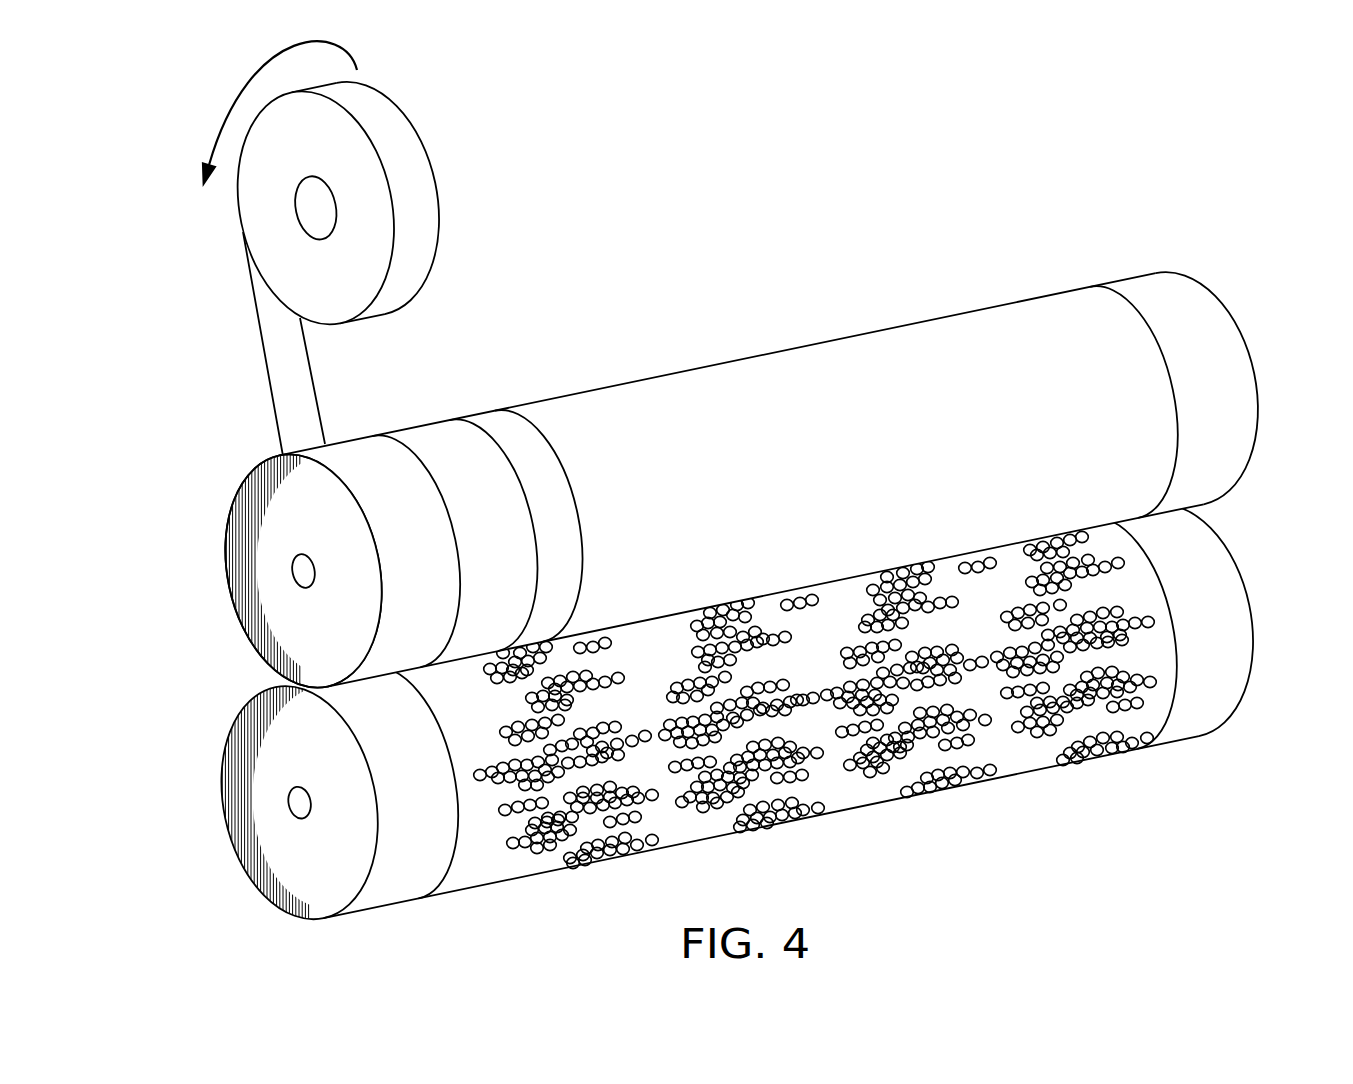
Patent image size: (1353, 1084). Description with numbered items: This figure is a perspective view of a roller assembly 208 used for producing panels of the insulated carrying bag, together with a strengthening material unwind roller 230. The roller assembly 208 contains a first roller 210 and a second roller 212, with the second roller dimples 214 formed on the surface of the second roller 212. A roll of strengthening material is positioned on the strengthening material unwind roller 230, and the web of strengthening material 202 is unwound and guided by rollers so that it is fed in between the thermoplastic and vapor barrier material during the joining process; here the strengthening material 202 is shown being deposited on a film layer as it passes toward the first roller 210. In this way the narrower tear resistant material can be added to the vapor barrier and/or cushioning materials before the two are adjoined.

The strengthening material 202 is at (292, 383).
The roller assembly 208 is at (702, 487).
The first roller 210 is at (903, 340).
The second roller 212 is at (1213, 682).
The second roller dimples 214 is at (1063, 708).
The strengthening material unwind roller 230 is at (432, 170).